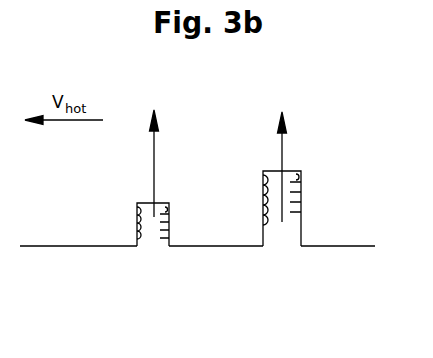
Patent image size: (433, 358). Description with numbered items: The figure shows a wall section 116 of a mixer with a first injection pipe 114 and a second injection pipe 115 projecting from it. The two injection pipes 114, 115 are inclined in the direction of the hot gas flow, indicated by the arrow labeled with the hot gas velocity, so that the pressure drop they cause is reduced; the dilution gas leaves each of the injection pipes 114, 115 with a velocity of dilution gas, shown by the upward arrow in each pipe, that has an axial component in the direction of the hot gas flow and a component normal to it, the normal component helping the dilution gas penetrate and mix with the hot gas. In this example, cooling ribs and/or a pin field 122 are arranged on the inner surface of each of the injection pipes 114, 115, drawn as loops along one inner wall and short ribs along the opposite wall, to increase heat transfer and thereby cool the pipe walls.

The first injection pipe 114 is at (280, 246).
The second injection pipe 115 is at (152, 246).
The substrate 116 is at (79, 246).
The cooling ribs and/or pin field 122 is at (143, 202).